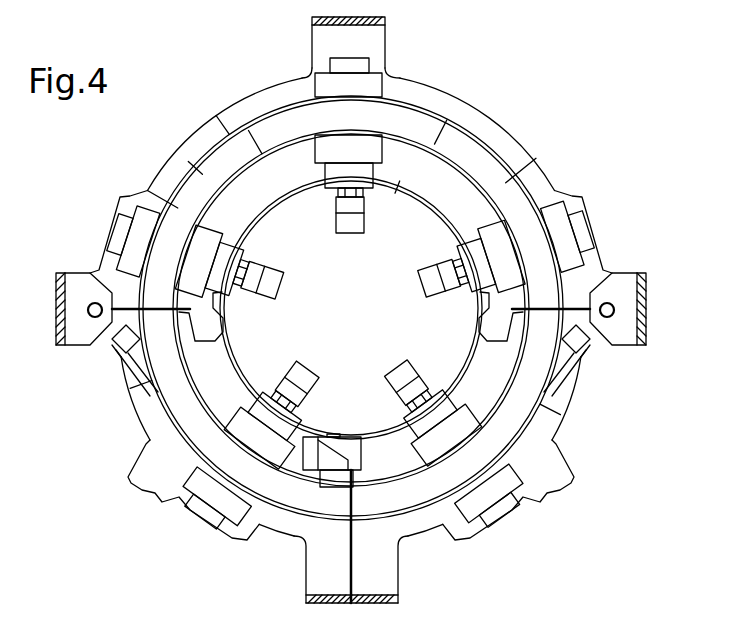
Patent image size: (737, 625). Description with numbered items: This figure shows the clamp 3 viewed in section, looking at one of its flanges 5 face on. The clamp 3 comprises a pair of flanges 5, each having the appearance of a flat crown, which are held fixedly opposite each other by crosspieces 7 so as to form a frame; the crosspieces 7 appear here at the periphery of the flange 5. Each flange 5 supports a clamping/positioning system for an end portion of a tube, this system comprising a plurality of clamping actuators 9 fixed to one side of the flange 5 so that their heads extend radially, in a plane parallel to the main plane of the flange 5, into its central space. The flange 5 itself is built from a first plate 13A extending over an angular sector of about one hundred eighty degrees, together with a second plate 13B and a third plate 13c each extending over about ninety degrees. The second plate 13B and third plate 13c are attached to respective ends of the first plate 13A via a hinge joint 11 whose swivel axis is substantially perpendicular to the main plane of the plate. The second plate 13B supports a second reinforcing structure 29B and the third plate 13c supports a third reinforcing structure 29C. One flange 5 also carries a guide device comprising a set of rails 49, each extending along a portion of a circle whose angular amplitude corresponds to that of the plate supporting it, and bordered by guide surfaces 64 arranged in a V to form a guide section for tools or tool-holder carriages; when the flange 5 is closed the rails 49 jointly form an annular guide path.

The clamp 3 is at (98, 468).
The flange 5 is at (522, 118).
The crosspiece 7 is at (311, 17).
The clamping actuator 9 is at (378, 88).
The hinge joint 11 is at (78, 360).
The first plate 13A is at (264, 192).
The second plate 13B is at (480, 374).
The third plate 13c is at (228, 360).
The second reinforcing structure 29B is at (266, 382).
The third reinforcing structure 29C is at (376, 436).
The rail 49 is at (145, 186).
The guide surface 64 is at (240, 100).